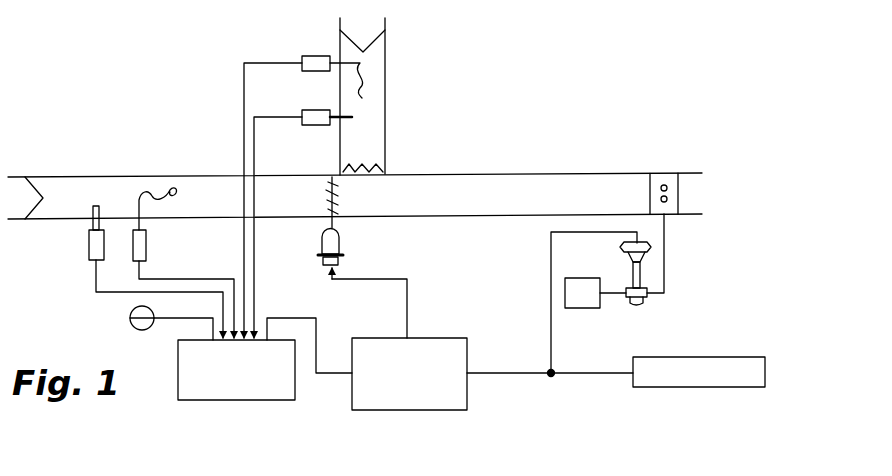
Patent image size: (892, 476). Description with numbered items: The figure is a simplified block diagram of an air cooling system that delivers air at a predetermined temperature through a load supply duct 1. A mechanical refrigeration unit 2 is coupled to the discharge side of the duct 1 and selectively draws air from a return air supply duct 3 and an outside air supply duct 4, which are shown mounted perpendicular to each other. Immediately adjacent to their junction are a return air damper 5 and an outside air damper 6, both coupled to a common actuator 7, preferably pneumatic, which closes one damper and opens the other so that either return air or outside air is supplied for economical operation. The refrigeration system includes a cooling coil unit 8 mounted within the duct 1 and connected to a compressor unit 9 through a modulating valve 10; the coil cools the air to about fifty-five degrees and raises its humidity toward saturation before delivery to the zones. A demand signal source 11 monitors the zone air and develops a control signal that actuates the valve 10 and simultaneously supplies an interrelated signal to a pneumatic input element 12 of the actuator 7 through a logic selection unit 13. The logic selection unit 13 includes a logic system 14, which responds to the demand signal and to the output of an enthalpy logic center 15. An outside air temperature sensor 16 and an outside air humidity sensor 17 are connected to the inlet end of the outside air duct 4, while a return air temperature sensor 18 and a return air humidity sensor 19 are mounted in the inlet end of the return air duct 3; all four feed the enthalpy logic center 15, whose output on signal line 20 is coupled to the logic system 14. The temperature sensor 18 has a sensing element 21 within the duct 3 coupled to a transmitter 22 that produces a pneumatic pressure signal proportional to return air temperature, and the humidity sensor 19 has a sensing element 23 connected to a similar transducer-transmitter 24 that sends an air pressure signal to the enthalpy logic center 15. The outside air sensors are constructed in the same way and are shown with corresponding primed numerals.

The load supply duct 1 is at (412, 216).
The mechanical refrigeration unit 2 is at (690, 249).
The return air supply duct 3 is at (387, 112).
The outside air supply duct 4 is at (125, 176).
The return air damper 5 is at (387, 167).
The outside air damper 6 is at (341, 201).
The common actuator 7 is at (319, 238).
The cooling coil unit 8 is at (668, 172).
The compressor unit 9 is at (583, 309).
The modulating valve 10 is at (622, 258).
The demand signal source 11 is at (615, 372).
The pneumatic input element 12 is at (343, 257).
The logic selection unit 13 is at (326, 428).
The logic system 14 is at (460, 336).
The enthalpy logic center 15 is at (237, 401).
The outside air temperature sensor 16 is at (148, 240).
The outside air humidity sensor 17 is at (88, 248).
The return air temperature sensor 18 is at (316, 54).
The return air humidity sensor 19 is at (303, 127).
The output signal line 20 is at (298, 318).
The sensing element 21 is at (386, 78).
The transmitter 22 is at (300, 58).
The sensing element 23 is at (352, 118).
The transducer-transmitter 24 is at (318, 108).